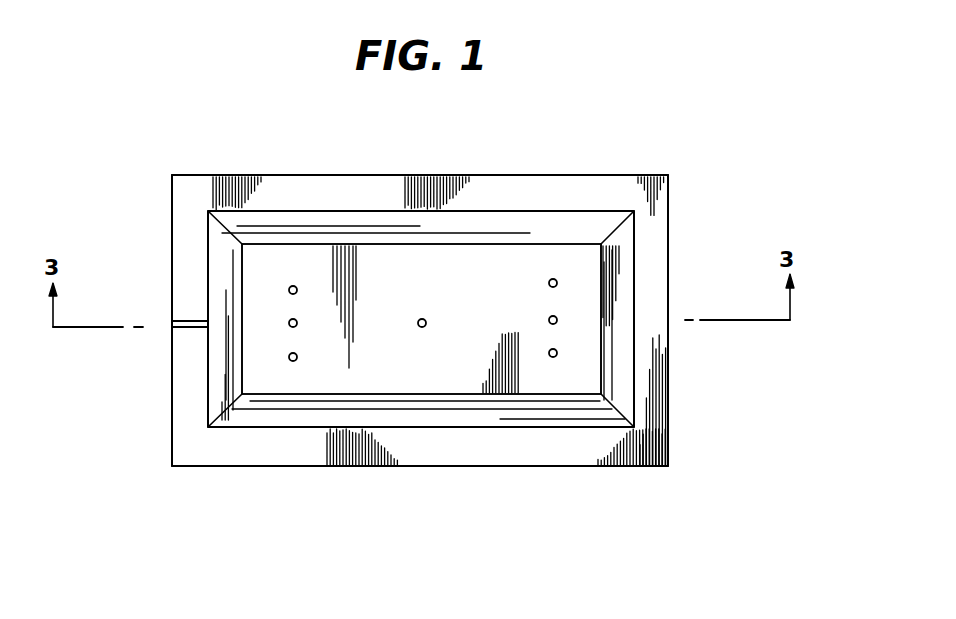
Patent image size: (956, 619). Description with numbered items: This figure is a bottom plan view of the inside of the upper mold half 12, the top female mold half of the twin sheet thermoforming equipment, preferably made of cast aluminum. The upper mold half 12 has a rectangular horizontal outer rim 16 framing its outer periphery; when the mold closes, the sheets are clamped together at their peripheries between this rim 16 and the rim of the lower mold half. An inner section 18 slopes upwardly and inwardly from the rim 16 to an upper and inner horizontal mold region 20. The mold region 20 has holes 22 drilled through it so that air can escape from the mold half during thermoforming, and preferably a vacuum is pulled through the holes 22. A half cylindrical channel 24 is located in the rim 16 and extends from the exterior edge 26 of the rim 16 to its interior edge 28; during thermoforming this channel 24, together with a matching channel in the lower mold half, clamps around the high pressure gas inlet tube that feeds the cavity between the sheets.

The upper mold half 12 is at (725, 236).
The outer rim 16 is at (488, 193).
The inner section 18 is at (367, 222).
The mold region 20 is at (523, 365).
The holes 22 is at (297, 359).
The half cylindrical channel 24 is at (172, 327).
The exterior edge 26 is at (170, 297).
The interior edge 28 is at (210, 362).